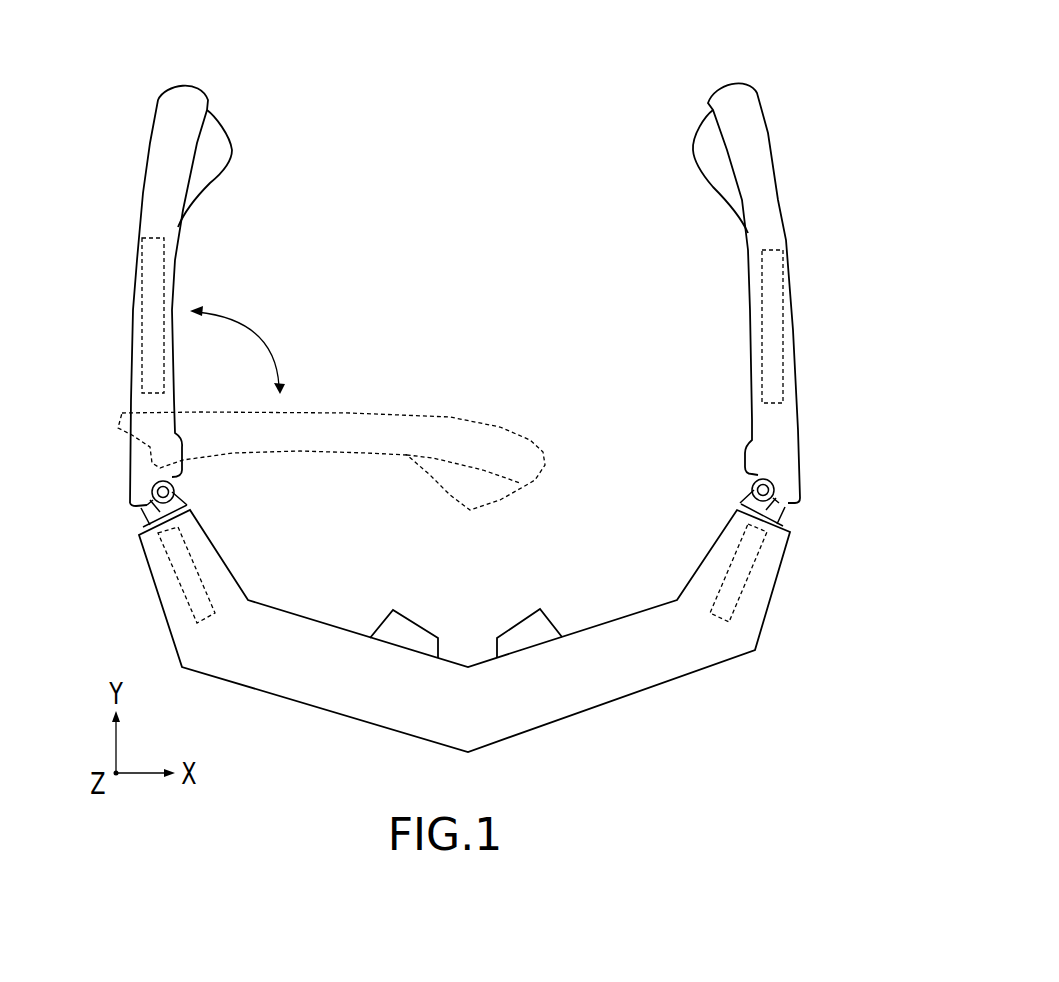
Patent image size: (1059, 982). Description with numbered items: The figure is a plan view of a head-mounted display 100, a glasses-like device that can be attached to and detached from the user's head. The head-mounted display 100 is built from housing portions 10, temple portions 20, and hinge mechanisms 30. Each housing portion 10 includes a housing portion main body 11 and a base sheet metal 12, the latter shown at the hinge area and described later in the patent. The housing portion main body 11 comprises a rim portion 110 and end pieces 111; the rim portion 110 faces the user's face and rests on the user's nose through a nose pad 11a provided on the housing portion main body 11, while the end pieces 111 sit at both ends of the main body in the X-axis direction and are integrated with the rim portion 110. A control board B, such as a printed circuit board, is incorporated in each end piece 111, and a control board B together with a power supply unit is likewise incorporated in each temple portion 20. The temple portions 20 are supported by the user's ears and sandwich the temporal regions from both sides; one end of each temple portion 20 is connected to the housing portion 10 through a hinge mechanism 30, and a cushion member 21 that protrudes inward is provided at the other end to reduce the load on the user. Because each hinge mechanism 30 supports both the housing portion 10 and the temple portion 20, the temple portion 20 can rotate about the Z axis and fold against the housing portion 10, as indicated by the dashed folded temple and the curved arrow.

The head-mounted display 100 is at (464, 386).
The temple portion 20 is at (464, 296).
The cushion member 21 is at (218, 155).
The housing portion 10 is at (475, 617).
The housing portion main body 11 is at (475, 631).
The nose pad 11a is at (513, 637).
The end piece 111 is at (475, 588).
The control board B is at (820, 578).
The rim portion 110 is at (630, 737).
The base sheet metal 12 is at (830, 512).
The hinge mechanism 30 is at (90, 558).